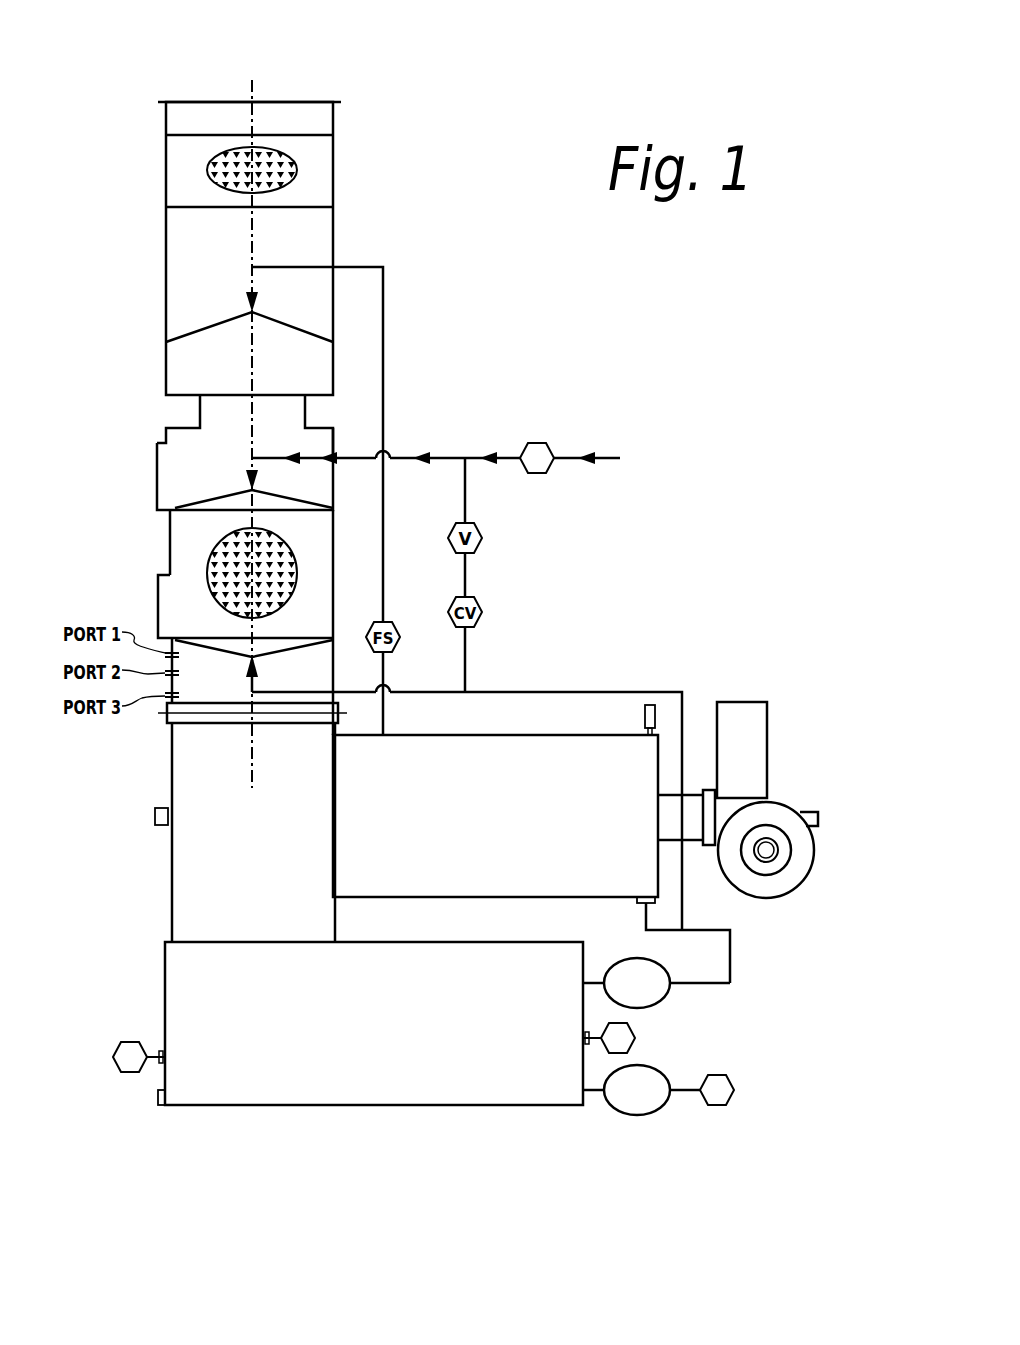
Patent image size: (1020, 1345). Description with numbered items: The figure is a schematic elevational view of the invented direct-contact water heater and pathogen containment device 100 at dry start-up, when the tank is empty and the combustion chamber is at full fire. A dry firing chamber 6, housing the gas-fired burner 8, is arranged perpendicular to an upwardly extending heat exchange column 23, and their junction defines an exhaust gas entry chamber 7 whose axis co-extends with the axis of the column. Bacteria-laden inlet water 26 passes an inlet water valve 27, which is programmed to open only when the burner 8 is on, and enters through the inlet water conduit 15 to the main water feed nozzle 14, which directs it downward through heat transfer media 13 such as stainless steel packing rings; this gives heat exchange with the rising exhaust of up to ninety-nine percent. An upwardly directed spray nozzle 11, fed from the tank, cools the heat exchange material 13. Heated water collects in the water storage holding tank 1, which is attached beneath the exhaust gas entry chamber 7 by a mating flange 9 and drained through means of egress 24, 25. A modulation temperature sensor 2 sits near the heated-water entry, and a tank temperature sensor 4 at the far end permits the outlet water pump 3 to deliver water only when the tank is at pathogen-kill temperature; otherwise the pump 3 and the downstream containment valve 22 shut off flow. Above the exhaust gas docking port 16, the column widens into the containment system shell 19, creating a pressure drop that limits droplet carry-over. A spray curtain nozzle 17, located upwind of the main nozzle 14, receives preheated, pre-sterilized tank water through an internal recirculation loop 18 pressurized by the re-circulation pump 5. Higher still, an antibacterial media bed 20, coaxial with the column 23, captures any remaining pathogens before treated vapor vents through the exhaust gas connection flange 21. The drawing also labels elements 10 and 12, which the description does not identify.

The water storage holding tank 1 is at (323, 1082).
The modulation temperature sensor 2 is at (125, 1073).
The outlet water pump 3 is at (655, 1110).
The tank temperature sensor 4 is at (636, 1040).
The re-circulation pump 5 is at (665, 994).
The dry firing chamber 6 is at (418, 867).
The exhaust gas entry chamber 7 is at (211, 832).
The gas-fired burner 8 is at (778, 818).
The mating flange 9 is at (158, 714).
The conduit 10 is at (417, 694).
The upwardly directed spray nozzle 11 is at (255, 680).
The housing 12 is at (157, 443).
The heat transfer media 13 is at (212, 556).
The main water feed nozzle 14 is at (250, 488).
The inlet water conduit 15 is at (408, 455).
The exhaust gas docking port 16 is at (200, 415).
The spray curtain nozzle 17 is at (250, 305).
The internal recirculation loop 18 is at (385, 283).
The containment system shell 19 is at (166, 232).
The antibacterial media bed 20 is at (297, 165).
The exhaust gas connection flange 21 is at (341, 102).
The containment valve 22 is at (730, 1080).
The heat exchange column 23 is at (318, 553).
The means of egress 24 is at (600, 975).
The means of egress 25 is at (595, 1106).
The inlet water feed 26 is at (592, 455).
The inlet water valve 27 is at (537, 443).
The device 100 is at (720, 332).